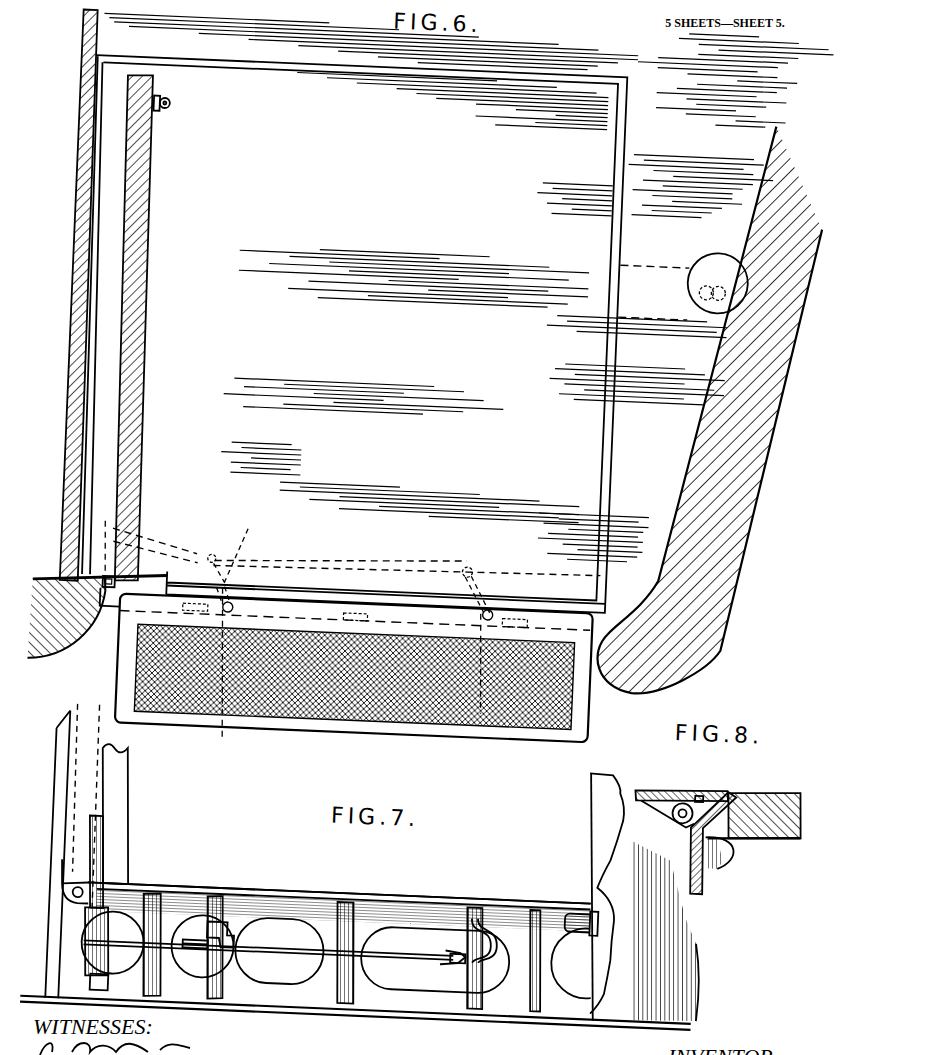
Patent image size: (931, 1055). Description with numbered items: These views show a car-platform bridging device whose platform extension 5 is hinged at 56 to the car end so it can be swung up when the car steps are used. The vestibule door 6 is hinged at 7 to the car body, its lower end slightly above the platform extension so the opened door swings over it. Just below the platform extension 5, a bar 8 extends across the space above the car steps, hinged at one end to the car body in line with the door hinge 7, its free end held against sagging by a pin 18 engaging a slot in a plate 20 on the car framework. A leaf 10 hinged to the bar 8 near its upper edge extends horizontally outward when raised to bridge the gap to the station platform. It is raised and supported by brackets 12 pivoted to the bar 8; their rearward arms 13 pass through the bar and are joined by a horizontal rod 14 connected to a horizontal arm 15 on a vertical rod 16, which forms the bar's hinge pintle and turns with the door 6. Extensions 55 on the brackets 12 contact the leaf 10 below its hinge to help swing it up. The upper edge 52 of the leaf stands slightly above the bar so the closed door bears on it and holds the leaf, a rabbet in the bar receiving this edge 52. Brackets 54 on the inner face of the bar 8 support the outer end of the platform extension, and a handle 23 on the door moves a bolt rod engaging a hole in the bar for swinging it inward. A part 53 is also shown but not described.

In FIG. 6, the platform extension 5 is at (604, 427).
In FIG. 8, the platform extension 5 is at (812, 804).
In FIG. 6, the vestibule door 6 is at (166, 334).
In FIG. 7, the vestibule door 6 is at (154, 812).
In FIG. 6, the door hinge 7 is at (160, 534).
In FIG. 7, the door hinge 7 is at (133, 853).
In FIG. 6, the bar 8 is at (408, 584).
In FIG. 7, the bar 8 is at (409, 978).
In FIG. 8, the bar 8 is at (754, 767).
In FIG. 6, the leaf 10 is at (397, 695).
In FIG. 7, the leaf 10 is at (350, 880).
In FIG. 8, the leaf 10 is at (676, 761).
In FIG. 6, the brackets 12 is at (242, 701).
In FIG. 7, the brackets 12 is at (254, 961).
In FIG. 6, the rearwardly extending arms 13 is at (524, 554).
In FIG. 7, the rearwardly extending arms 13 is at (446, 970).
In FIG. 6, the horizontal rod 14 is at (369, 546).
In FIG. 7, the horizontal rod 14 is at (460, 939).
In FIG. 6, the horizontal arm 15 is at (162, 506).
In FIG. 7, the horizontal arm 15 is at (130, 943).
In FIG. 6, the vertical rod 16 is at (130, 593).
In FIG. 7, the vertical rod 16 is at (141, 984).
In FIG. 7, the pin 18 is at (615, 892).
In FIG. 7, the plate 20 is at (635, 882).
In FIG. 6, the handle 23 is at (176, 96).
In FIG. 6, the upper edge of the leaf 52 is at (451, 597).
In FIG. 8, the upper edge of the leaf 52 is at (697, 779).
In FIG. 8, the roller 53 is at (674, 826).
In FIG. 8, the bracket 54 is at (754, 820).
In FIG. 7, the extensions 55 is at (269, 917).
In FIG. 6, the platform extension hinge 56 is at (102, 49).
In FIG. 7, the platform extension hinge 56 is at (109, 887).